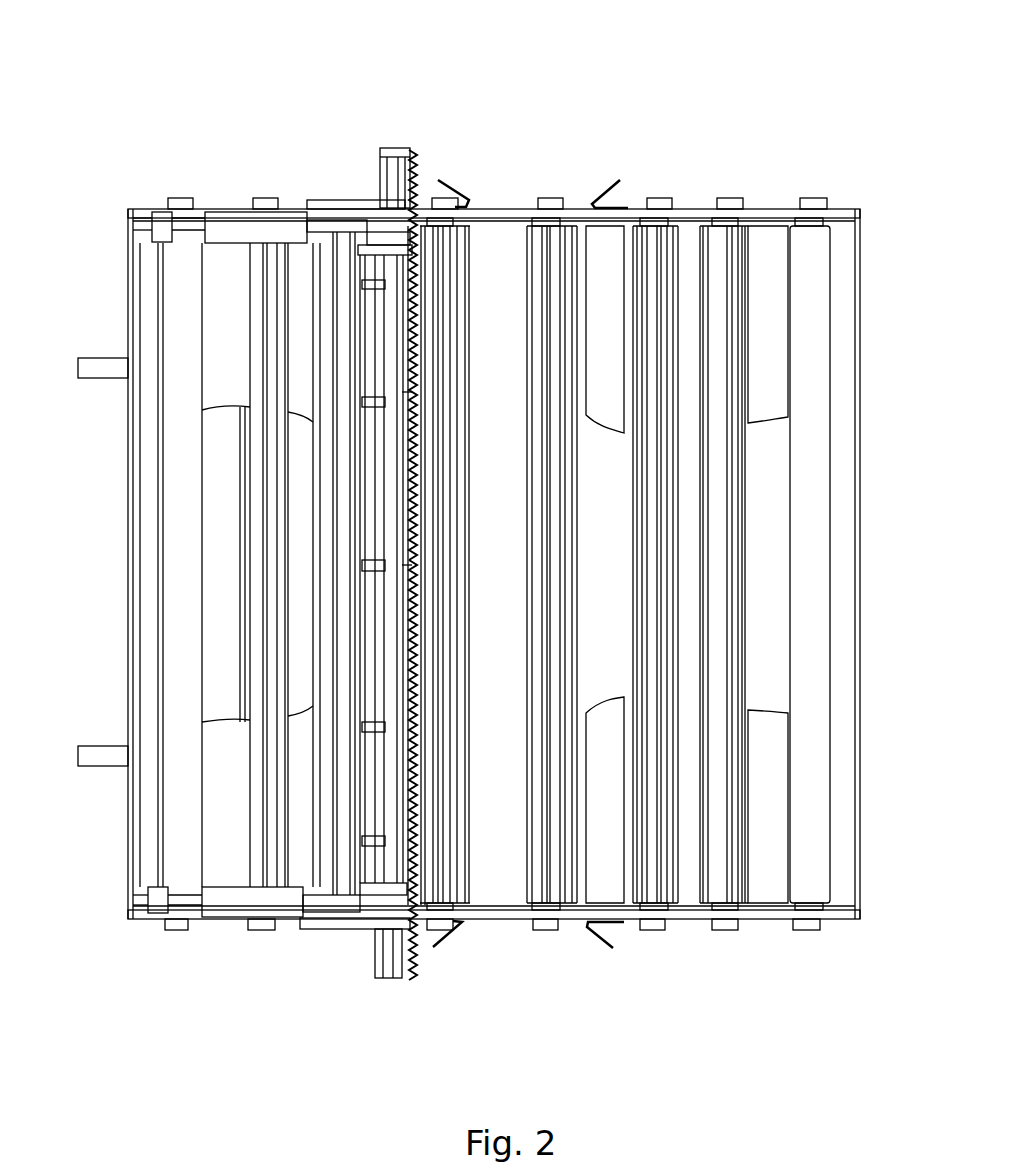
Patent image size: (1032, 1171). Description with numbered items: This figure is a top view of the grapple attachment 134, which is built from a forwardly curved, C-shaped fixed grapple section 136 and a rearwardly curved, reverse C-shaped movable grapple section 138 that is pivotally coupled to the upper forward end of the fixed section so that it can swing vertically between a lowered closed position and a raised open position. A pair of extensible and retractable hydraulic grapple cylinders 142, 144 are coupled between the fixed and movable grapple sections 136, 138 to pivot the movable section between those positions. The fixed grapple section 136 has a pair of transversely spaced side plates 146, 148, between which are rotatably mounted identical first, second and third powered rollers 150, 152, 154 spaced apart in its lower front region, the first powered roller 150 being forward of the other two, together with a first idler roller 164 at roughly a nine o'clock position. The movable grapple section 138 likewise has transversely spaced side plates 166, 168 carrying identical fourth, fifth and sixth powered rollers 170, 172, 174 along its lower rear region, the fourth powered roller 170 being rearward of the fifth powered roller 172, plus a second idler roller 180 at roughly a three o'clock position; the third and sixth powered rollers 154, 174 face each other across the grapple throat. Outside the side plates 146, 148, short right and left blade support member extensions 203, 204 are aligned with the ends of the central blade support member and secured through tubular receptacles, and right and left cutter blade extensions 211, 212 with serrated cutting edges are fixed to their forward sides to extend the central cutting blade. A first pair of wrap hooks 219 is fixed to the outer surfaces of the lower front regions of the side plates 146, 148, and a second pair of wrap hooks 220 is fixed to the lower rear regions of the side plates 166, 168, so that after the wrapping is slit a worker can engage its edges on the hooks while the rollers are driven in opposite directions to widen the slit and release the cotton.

The grapple attachment 134 is at (533, 155).
The fixed grapple section 136 is at (116, 558).
The movable grapple section 138 is at (768, 200).
The hydraulic grapple cylinder 142 is at (221, 912).
The hydraulic grapple cylinder 144 is at (232, 220).
The side plate 146 is at (180, 918).
The side plate 148 is at (186, 212).
The first powered roller 150 is at (452, 592).
The second powered roller 152 is at (327, 565).
The third powered roller 154 is at (243, 620).
The first idler roller 164 is at (160, 665).
The side plate 166 is at (685, 920).
The side plate 168 is at (687, 202).
The fourth powered roller 170 is at (527, 462).
The fifth powered roller 172 is at (630, 545).
The sixth powered roller 174 is at (745, 577).
The second idler roller 180 is at (820, 645).
The right blade support member extension 203 is at (385, 952).
The left blade support member extension 204 is at (380, 157).
The right cutter blade extension 211 is at (416, 978).
The left cutter blade extension 212 is at (417, 157).
The wrap hook 219 is at (455, 938).
The wrap hook 220 is at (590, 940).